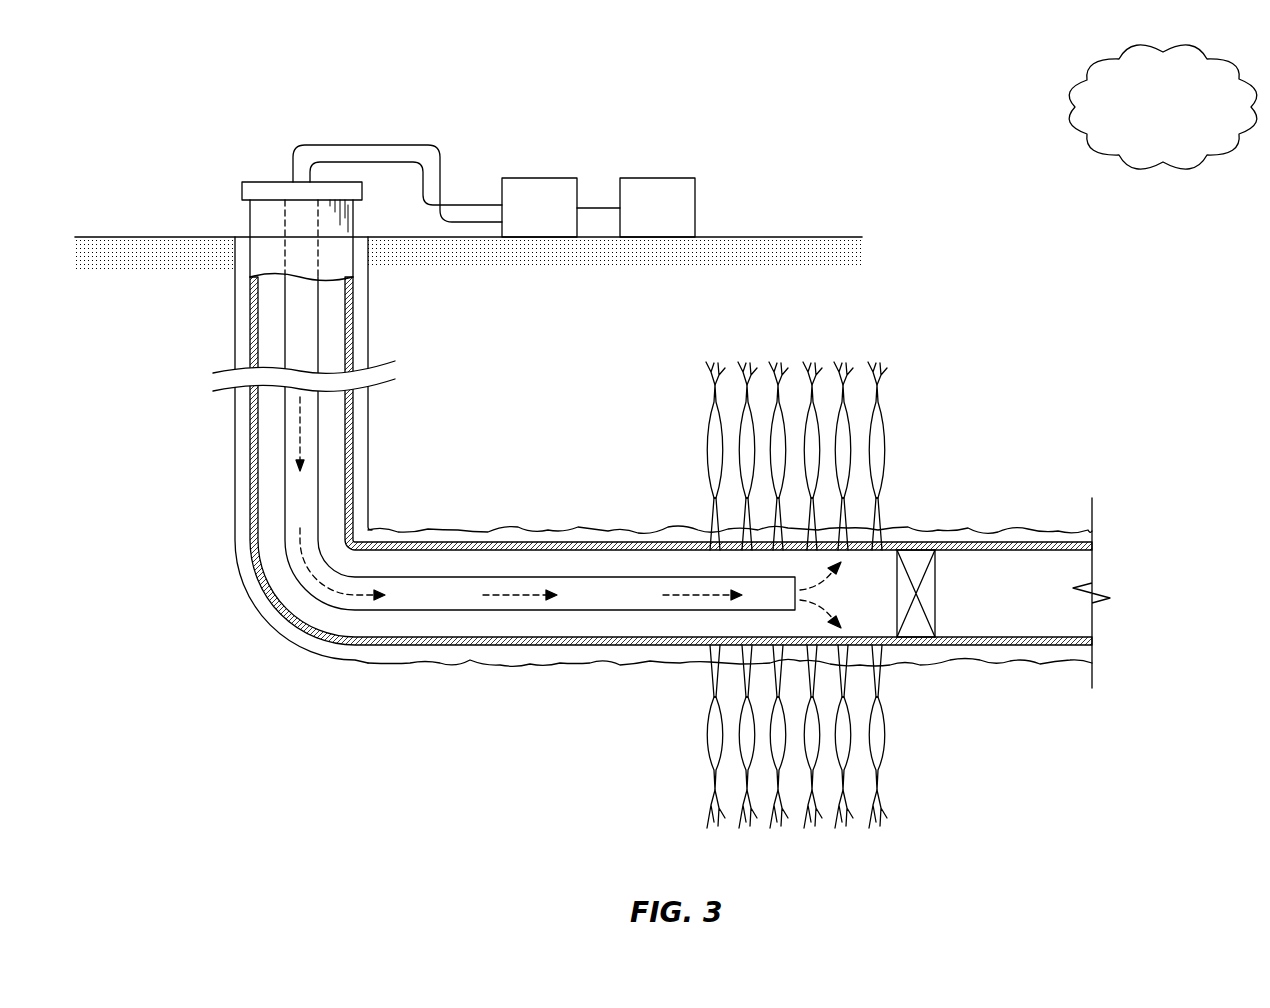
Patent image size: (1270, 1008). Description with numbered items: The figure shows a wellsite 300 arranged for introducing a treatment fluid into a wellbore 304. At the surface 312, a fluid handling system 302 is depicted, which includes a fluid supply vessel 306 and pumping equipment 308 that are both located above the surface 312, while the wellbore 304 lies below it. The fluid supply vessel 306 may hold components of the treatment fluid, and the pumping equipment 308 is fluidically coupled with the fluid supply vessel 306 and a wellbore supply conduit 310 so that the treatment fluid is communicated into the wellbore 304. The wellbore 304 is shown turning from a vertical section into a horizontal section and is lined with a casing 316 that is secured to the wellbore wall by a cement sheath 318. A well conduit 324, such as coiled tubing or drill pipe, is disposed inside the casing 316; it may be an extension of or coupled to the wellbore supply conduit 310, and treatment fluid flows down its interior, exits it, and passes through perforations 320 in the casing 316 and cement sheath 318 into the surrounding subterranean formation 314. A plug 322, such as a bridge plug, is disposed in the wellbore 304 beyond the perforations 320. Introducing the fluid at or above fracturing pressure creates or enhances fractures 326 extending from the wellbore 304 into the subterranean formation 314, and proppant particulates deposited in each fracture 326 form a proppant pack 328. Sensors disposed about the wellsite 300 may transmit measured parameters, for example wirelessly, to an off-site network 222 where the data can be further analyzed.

The wellsite 300 is at (212, 42).
The fluid handling system 302 is at (670, 141).
The wellbore 304 is at (368, 425).
The fluid supply vessel 306 is at (660, 178).
The pumping equipment 308 is at (542, 178).
The wellbore supply conduit 310 is at (367, 143).
The surface 312 is at (745, 237).
The subterranean formation 314 is at (468, 323).
The casing 316 is at (510, 541).
The cement sheath 318 is at (592, 528).
The perforations 320 is at (710, 498).
The plug 322 is at (917, 560).
The well conduit 324 is at (410, 577).
The fracture 326 is at (710, 403).
The proppant pack 328 is at (708, 455).
The off-site network 222 is at (1186, 121).